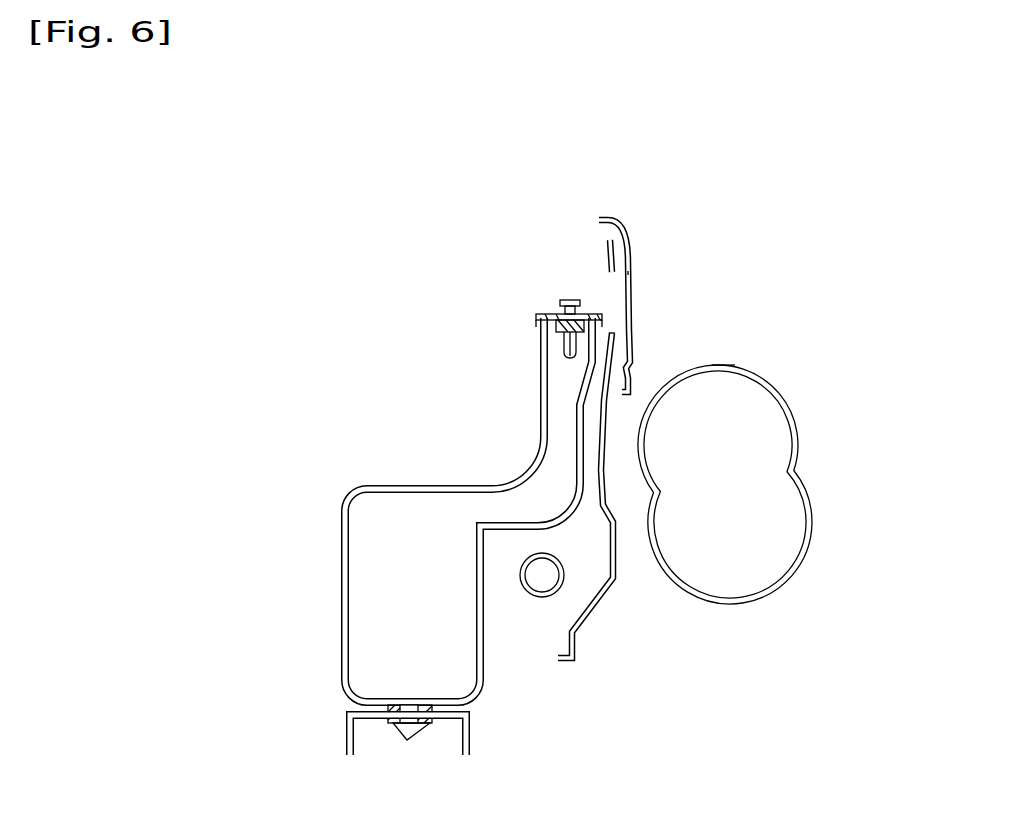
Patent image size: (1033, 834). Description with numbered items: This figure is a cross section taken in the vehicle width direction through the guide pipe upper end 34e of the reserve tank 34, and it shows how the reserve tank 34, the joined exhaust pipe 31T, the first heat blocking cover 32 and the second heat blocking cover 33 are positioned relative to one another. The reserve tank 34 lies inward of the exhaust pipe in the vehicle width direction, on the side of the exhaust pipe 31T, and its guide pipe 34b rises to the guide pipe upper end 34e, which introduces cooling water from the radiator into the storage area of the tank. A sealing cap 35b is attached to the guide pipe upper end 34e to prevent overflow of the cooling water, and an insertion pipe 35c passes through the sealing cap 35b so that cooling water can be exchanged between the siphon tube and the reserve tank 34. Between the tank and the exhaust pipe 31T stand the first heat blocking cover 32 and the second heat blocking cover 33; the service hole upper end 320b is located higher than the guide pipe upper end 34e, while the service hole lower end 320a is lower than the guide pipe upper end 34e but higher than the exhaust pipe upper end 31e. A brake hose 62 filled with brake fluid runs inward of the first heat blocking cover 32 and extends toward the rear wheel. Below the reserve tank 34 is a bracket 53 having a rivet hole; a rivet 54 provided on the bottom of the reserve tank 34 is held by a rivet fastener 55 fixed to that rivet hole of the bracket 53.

The first heat blocking cover 32 is at (604, 256).
The second heat blocking cover 33 is at (626, 242).
The service hole upper end 320b is at (632, 273).
The service hole lower end 320a is at (612, 332).
The guide pipe upper end 34e is at (603, 322).
The exhaust pipe upper end 31e is at (735, 363).
The exhaust pipe 31T is at (786, 388).
The sealing cap 35b is at (536, 317).
The insertion pipe 35c is at (560, 312).
The guide pipe 34b is at (540, 410).
The reserve tank 34 is at (487, 680).
The brake hose 62 is at (535, 597).
The rivet fastener 55 is at (470, 714).
The rivet 54 is at (407, 742).
The bracket 53 is at (470, 752).